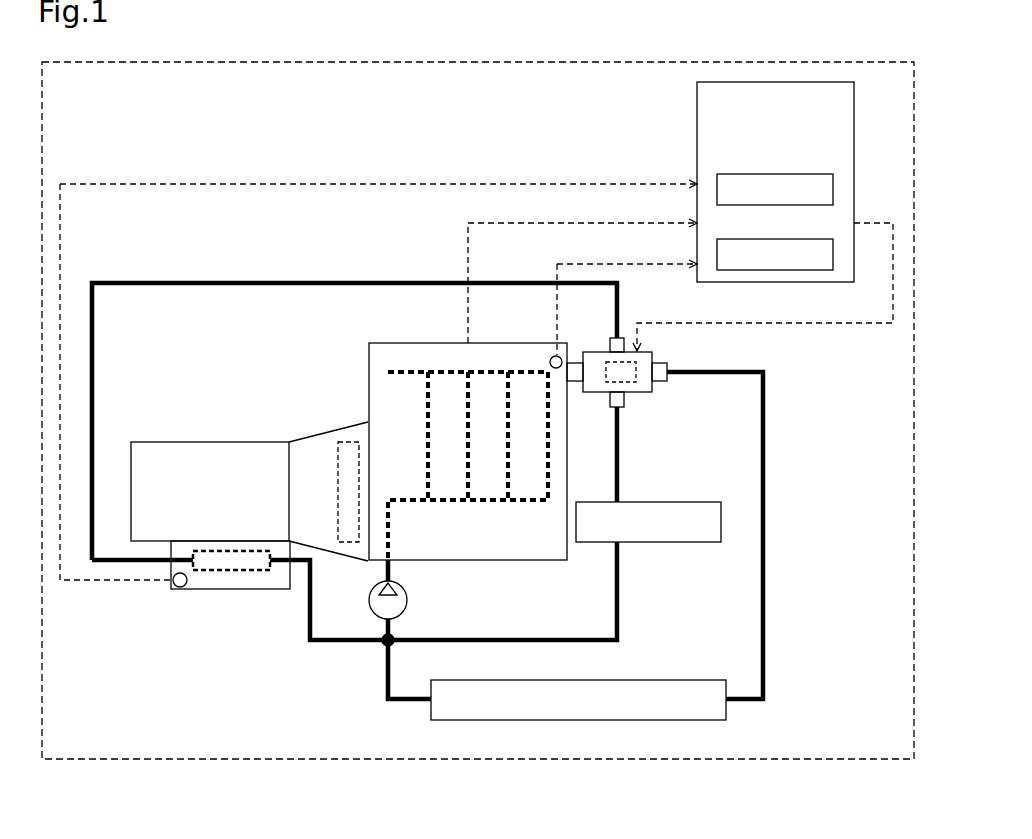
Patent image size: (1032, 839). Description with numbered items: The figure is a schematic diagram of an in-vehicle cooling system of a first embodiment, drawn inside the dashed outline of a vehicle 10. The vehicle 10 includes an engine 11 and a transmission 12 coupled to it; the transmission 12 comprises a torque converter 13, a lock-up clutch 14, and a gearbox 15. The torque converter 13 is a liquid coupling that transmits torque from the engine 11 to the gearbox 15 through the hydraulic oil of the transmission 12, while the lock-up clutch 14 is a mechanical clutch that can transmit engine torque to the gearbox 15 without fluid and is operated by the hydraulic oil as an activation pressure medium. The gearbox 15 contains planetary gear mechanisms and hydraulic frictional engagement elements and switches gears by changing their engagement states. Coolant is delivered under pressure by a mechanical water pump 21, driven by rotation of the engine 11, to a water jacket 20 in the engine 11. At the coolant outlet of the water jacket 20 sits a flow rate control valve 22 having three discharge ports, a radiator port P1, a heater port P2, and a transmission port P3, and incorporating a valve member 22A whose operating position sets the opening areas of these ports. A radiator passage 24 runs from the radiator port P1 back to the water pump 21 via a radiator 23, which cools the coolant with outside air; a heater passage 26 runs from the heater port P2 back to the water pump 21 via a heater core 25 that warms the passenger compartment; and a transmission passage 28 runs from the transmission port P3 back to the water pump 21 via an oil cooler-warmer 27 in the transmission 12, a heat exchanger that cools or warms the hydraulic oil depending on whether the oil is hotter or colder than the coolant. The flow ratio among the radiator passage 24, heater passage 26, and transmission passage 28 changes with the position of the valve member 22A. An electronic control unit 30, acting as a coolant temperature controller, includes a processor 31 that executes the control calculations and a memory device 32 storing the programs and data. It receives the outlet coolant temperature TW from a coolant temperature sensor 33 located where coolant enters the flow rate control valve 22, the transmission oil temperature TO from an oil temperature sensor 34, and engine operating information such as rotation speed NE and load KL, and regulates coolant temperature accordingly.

The vehicle 10 is at (805, 760).
The engine 11 is at (522, 562).
The transmission 12 is at (178, 412).
The torque converter 13 is at (328, 431).
The lock-up clutch 14 is at (350, 547).
The gearbox 15 is at (228, 442).
The water jacket 20 is at (486, 503).
The mechanical water pump 21 is at (407, 603).
The flow rate control valve 22 is at (590, 395).
The valve member 22A is at (636, 390).
The radiator 23 is at (658, 678).
The radiator passage 24 is at (765, 535).
The heater core 25 is at (655, 503).
The heater passage 26 is at (622, 580).
The oil cooler-warmer 27 is at (232, 572).
The transmission passage 28 is at (403, 281).
The electronic control unit 30 is at (856, 185).
The processor 31 is at (762, 173).
The memory device 32 is at (762, 238).
The coolant temperature sensor 33 is at (552, 356).
The oil temperature sensor 34 is at (180, 589).
The radiator port P1 is at (668, 360).
The heater port P2 is at (632, 405).
The transmission port P3 is at (606, 343).